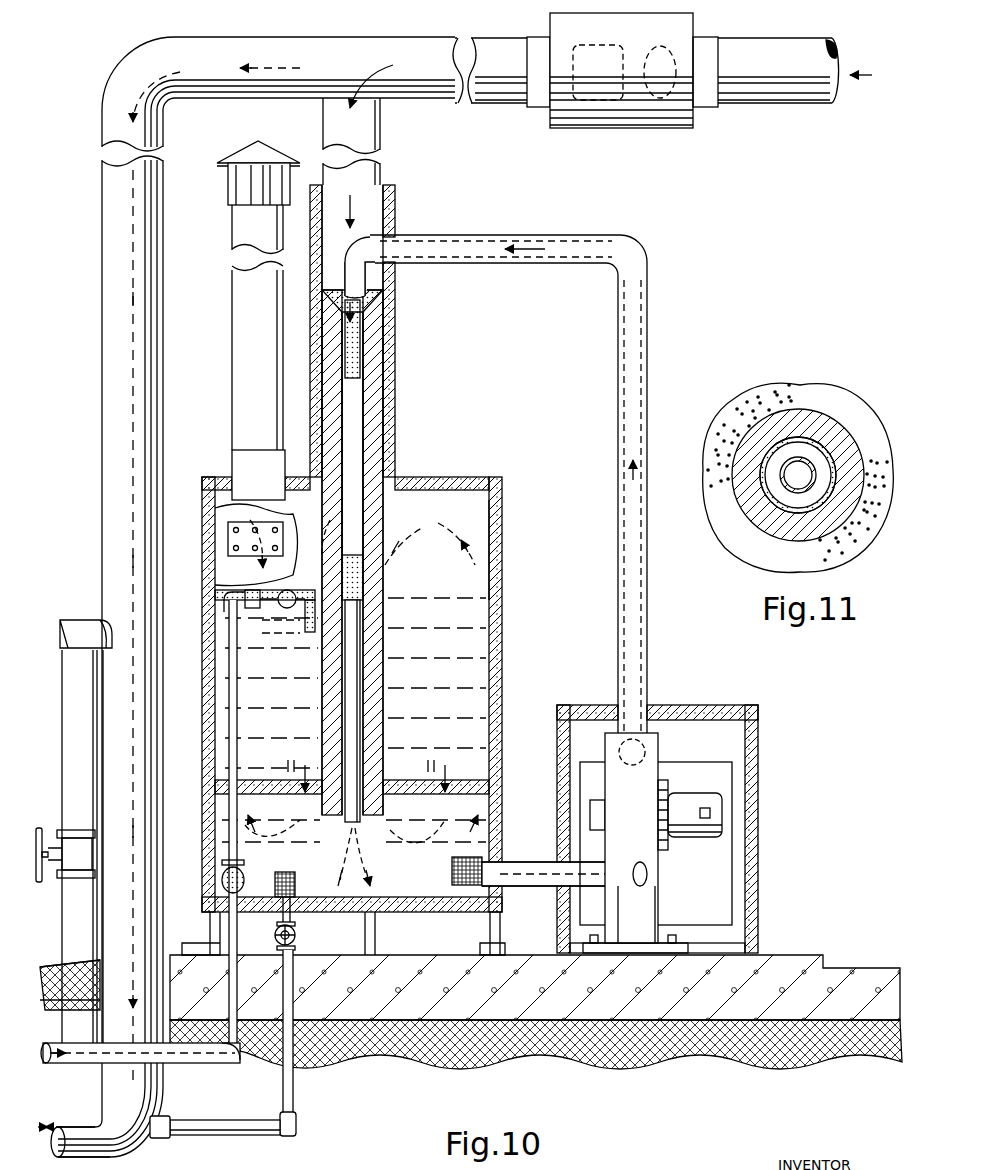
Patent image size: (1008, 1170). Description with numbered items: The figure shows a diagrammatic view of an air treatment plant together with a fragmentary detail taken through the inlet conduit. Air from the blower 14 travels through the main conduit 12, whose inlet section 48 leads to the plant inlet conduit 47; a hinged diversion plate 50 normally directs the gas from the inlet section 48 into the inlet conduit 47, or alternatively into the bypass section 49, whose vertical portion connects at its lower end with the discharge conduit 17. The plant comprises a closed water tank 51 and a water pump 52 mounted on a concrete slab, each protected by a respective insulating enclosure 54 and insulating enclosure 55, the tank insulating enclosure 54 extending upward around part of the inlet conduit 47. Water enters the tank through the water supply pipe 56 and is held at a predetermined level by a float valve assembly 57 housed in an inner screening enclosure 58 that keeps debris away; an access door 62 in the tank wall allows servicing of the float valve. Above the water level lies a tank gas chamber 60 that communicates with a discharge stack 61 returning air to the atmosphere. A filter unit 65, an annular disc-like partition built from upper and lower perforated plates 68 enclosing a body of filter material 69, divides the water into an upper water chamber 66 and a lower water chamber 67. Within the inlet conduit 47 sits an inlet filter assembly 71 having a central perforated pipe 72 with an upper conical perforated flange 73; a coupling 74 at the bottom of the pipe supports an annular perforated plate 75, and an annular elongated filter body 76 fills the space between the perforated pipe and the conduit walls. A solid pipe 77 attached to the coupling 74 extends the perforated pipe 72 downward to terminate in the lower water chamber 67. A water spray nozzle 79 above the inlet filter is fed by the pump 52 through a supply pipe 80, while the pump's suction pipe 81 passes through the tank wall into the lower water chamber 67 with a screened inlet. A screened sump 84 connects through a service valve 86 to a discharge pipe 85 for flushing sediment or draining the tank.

In FIG. 10, the main conduit 12 is at (780, 92).
In FIG. 10, the blower 14 is at (680, 120).
In FIG. 10, the discharge conduit 17 is at (108, 1138).
In FIG. 10, the inlet conduit 47 is at (385, 172).
In FIG. 11, the inlet conduit 47 is at (836, 445).
In FIG. 10, the inlet section 48 is at (508, 28).
In FIG. 10, the bypass section 49 is at (100, 328).
In FIG. 10, the hinged diversion plate 50 is at (312, 100).
In FIG. 10, the water tank 51 is at (472, 478).
In FIG. 10, the water pump 52 is at (652, 760).
In FIG. 10, the tank insulating enclosure 54 is at (502, 565).
In FIG. 10, the pump insulating enclosure 55 is at (758, 770).
In FIG. 10, the water supply pipe 56 is at (228, 683).
In FIG. 10, the float valve assembly 57 is at (240, 592).
In FIG. 10, the inner screening enclosure 58 is at (275, 638).
In FIG. 10, the tank gas chamber 60 is at (478, 513).
In FIG. 10, the discharge stack 61 is at (232, 314).
In FIG. 10, the access door 62 is at (228, 535).
In FIG. 10, the filter unit 65 is at (436, 780).
In FIG. 10, the upper water chamber 66 is at (478, 672).
In FIG. 10, the lower water chamber 67 is at (470, 818).
In FIG. 10, the perforated plates 68 is at (262, 780).
In FIG. 11, the perforated plates 68 is at (830, 388).
In FIG. 10, the filter material 69 is at (272, 810).
In FIG. 11, the filter material 69 is at (830, 418).
In FIG. 10, the inlet filter assembly 71 is at (372, 355).
In FIG. 10, the central perforated pipe 72 is at (355, 412).
In FIG. 10, the upper conical perforated flange 73 is at (382, 306).
In FIG. 10, the coupling 74 is at (362, 628).
In FIG. 10, the annular perforated plate 75 is at (370, 586).
In FIG. 10, the annular elongated filter body 76 is at (370, 518).
In FIG. 10, the solid pipe 77 is at (362, 714).
In FIG. 11, the solid pipe 77 is at (798, 484).
In FIG. 10, the water spray nozzle 79 is at (366, 280).
In FIG. 10, the supply pipe 80 is at (645, 283).
In FIG. 10, the suction pipe 81 is at (568, 878).
In FIG. 10, the screened sump 84 is at (290, 912).
In FIG. 10, the discharge pipe 85 is at (293, 1087).
In FIG. 10, the service valve 86 is at (277, 940).